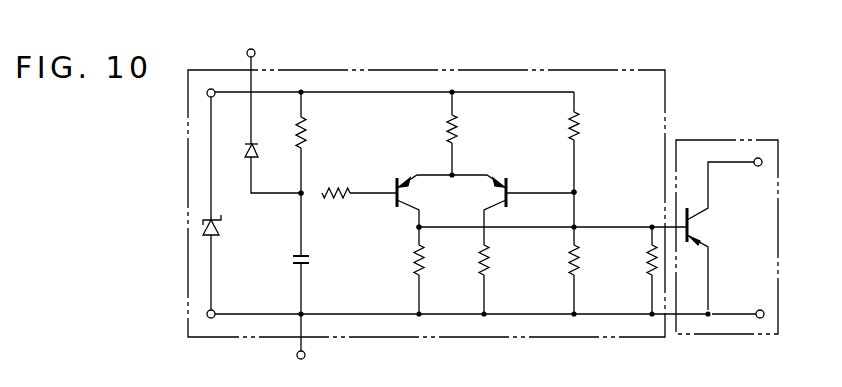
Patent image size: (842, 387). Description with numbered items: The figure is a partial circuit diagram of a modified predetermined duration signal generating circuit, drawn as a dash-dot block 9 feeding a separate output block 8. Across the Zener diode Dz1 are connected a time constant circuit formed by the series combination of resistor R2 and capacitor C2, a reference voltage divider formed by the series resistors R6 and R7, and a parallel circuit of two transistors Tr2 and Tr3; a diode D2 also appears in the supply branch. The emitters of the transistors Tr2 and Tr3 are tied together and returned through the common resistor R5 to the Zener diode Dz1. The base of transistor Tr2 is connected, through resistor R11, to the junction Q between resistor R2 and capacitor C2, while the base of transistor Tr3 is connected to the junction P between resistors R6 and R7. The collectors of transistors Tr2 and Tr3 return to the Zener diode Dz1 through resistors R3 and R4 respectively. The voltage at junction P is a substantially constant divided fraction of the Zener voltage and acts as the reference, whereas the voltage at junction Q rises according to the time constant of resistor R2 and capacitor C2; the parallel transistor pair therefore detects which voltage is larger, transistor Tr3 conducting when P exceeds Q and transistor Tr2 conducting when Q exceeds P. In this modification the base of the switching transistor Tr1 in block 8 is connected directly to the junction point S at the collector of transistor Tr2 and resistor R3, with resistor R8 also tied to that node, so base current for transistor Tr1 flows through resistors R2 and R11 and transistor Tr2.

The control circuit 9 is at (597, 70).
The output transistor circuit 8 is at (733, 140).
The diode D2 is at (246, 147).
The Zener diode Dz1 is at (222, 229).
The capacitor C2 is at (291, 259).
The junction Q is at (303, 196).
The resistor R2 is at (307, 133).
The resistor R11 is at (338, 189).
The common resistor R5 is at (458, 128).
The resistor R6 is at (580, 126).
The resistor R3 is at (413, 262).
The resistor R4 is at (479, 261).
The resistor R7 is at (569, 261).
The resistor R8 is at (647, 261).
The transistor Tr2 is at (402, 190).
The transistor Tr3 is at (503, 190).
The switching transistor Tr1 is at (690, 229).
The junction point S is at (416, 228).
The junction P is at (577, 191).